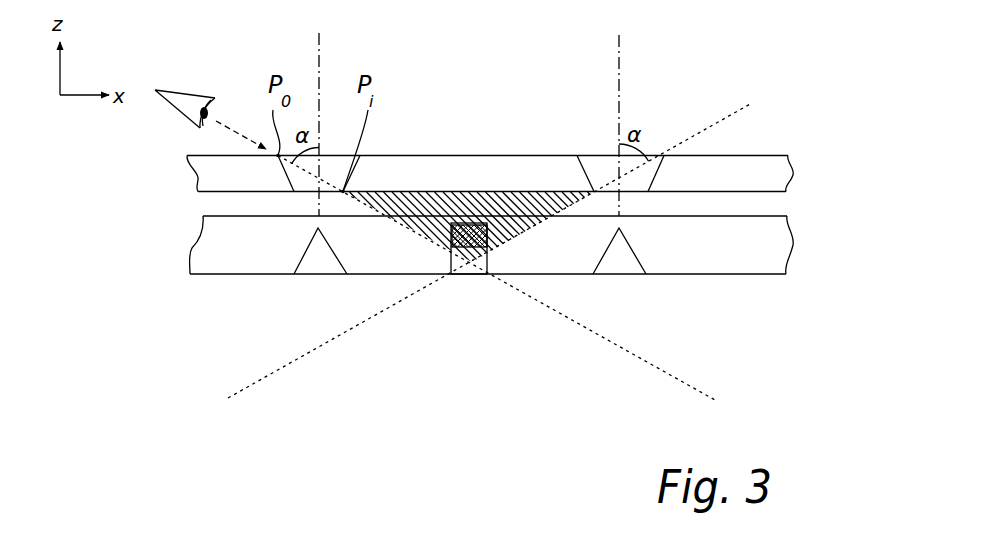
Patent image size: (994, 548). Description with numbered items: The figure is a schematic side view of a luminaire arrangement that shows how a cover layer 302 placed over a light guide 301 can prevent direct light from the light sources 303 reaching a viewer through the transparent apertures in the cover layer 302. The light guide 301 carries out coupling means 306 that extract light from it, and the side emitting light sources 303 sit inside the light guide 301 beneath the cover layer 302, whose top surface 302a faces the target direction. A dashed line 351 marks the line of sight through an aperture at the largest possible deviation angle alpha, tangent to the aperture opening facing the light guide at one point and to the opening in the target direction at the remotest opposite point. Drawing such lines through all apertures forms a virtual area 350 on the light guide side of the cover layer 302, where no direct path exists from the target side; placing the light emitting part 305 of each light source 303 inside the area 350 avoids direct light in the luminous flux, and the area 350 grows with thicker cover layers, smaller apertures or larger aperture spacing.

The light guide 301 is at (217, 253).
The cover layer 302 is at (468, 134).
The top surface of cover plate 302a is at (508, 152).
The light sources 303 is at (465, 282).
The light emitting part 305 is at (450, 237).
The out coupling means 306 is at (302, 280).
The virtual area 350 is at (520, 233).
The dashed line 351 is at (305, 355).